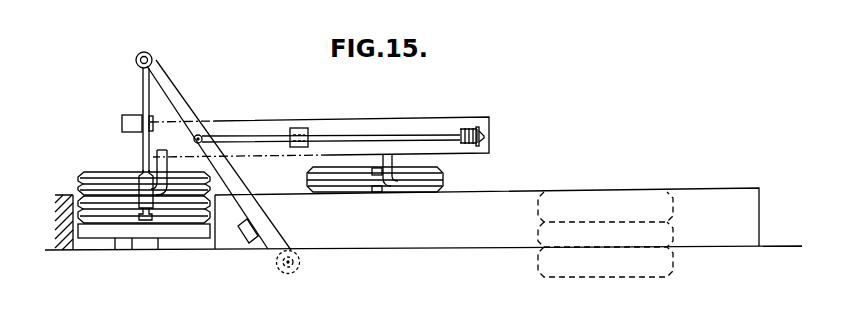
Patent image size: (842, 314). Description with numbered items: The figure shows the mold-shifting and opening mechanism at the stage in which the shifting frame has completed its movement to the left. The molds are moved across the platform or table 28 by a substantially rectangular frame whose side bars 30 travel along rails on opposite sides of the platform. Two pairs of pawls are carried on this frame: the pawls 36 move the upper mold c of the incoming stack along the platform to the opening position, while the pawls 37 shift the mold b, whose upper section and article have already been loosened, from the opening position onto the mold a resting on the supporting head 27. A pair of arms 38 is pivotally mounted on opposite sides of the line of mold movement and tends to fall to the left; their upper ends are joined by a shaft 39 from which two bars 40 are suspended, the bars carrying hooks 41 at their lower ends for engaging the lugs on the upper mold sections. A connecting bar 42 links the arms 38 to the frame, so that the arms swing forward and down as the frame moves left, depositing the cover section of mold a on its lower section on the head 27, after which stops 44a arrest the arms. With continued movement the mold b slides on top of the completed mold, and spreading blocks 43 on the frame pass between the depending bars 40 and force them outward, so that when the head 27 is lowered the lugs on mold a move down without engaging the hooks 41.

The platform or table 28 is at (391, 238).
The supporting head 27 is at (115, 236).
The mold a is at (96, 206).
The mold b is at (81, 176).
The mold c is at (444, 176).
The hooks 41 is at (147, 202).
The pawls 37 is at (165, 165).
The bars 40 is at (141, 88).
The spreading blocks 43 is at (123, 116).
The shaft 39 is at (147, 53).
The arms 38 is at (165, 85).
The stops 44a is at (242, 236).
The side bars 30 is at (412, 118).
The connecting bar 42 is at (265, 135).
The pawls 36 is at (391, 174).